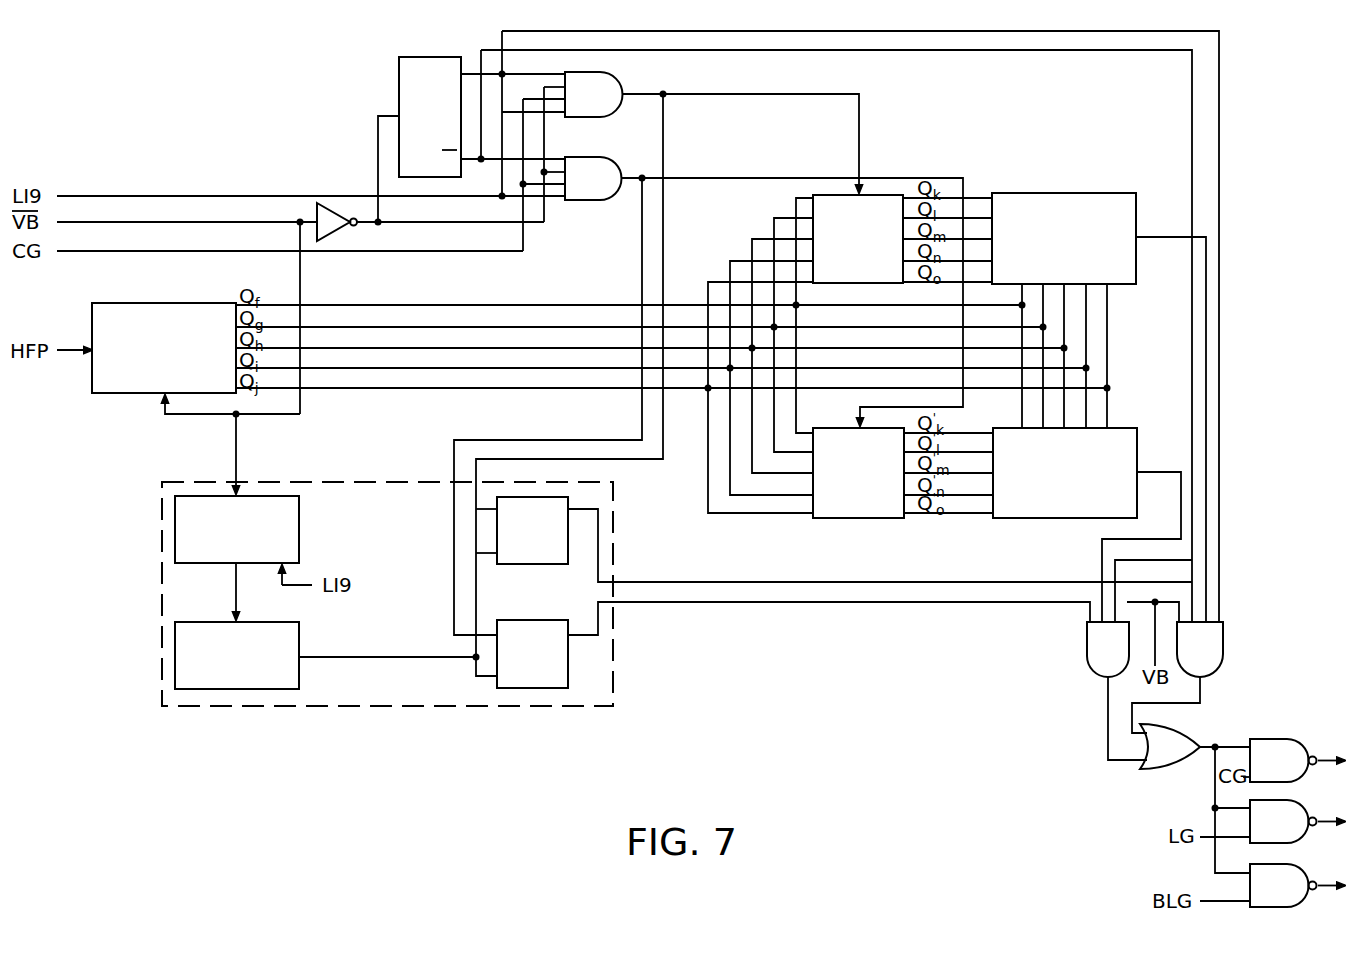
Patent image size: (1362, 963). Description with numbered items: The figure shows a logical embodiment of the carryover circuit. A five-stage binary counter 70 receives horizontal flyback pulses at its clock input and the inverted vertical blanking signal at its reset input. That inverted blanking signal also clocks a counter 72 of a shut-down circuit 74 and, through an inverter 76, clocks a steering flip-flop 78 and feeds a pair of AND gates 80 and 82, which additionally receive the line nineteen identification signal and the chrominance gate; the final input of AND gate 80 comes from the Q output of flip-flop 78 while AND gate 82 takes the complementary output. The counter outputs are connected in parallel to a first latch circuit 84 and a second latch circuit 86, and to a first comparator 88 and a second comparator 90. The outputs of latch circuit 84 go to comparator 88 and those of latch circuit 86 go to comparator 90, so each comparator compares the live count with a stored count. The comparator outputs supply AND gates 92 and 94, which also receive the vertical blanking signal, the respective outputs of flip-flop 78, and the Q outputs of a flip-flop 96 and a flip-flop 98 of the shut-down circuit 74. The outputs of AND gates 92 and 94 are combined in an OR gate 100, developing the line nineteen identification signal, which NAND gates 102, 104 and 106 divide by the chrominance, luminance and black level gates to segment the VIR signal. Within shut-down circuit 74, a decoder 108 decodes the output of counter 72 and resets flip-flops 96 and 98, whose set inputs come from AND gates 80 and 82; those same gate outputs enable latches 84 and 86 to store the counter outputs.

The 5-stage binary counter 70 is at (178, 303).
The counter 72 is at (298, 530).
The shut-down circuit 74 is at (162, 558).
The inverter 76 is at (345, 232).
The steering flip-flop 78 is at (397, 88).
The AND gate 80 is at (610, 76).
The AND gate 82 is at (610, 158).
The first latch circuit 84 is at (866, 193).
The second latch circuit 86 is at (867, 518).
The first comparator 88 is at (1060, 193).
The second comparator 90 is at (1048, 518).
The AND gate 92 is at (1220, 672).
The AND gate 94 is at (1087, 672).
The flip-flop 96 is at (556, 564).
The flip-flop 98 is at (568, 645).
The OR gate 100 is at (1174, 727).
The NAND gate 102 is at (1298, 742).
The NAND gate 104 is at (1300, 810).
The NAND gate 106 is at (1300, 877).
The decoder 108 is at (299, 678).